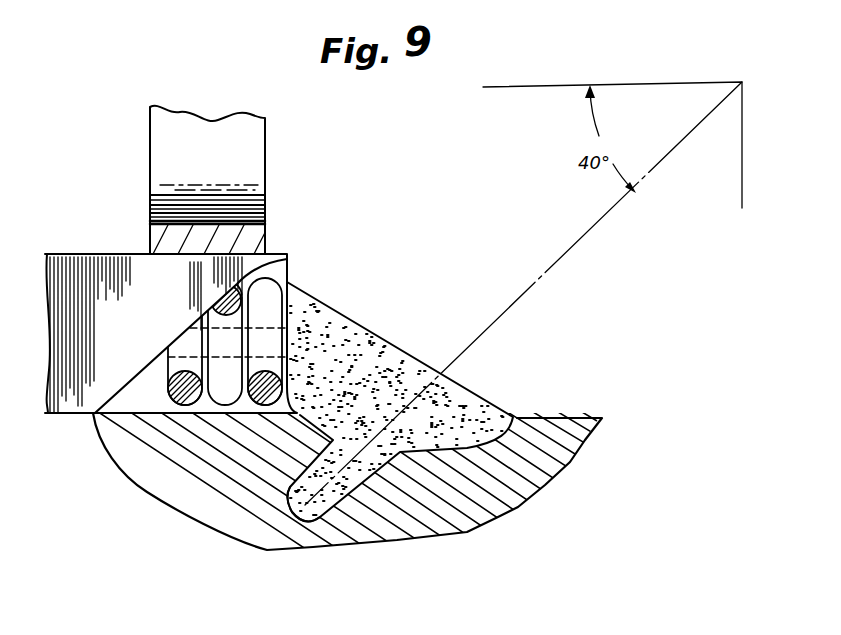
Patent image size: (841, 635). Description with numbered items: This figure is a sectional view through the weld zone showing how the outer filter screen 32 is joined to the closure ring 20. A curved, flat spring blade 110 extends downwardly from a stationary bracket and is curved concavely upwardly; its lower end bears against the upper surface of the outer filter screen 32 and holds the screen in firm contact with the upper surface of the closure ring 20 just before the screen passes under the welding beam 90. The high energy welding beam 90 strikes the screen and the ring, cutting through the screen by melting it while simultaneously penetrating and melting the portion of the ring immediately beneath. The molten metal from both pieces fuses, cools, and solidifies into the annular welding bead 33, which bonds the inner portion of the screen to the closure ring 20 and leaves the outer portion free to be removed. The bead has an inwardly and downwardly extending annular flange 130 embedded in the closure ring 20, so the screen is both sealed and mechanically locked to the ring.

The closure ring 20 is at (574, 396).
The outer filter screen 32 is at (90, 253).
The welding bead 33 is at (487, 398).
The welding beam 90 is at (527, 293).
The curved, flat spring blade 110 is at (266, 182).
The annular flange 130 is at (287, 486).